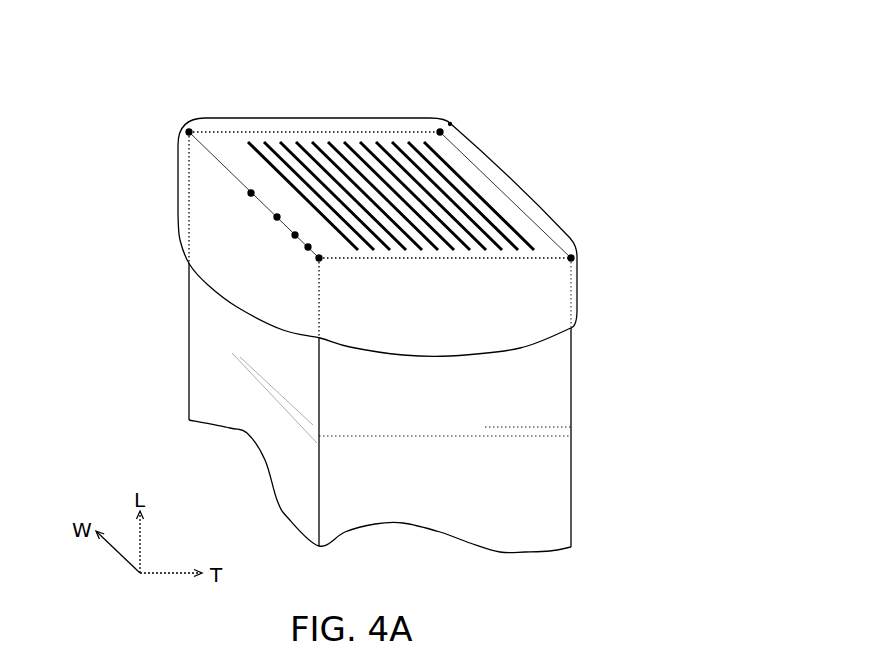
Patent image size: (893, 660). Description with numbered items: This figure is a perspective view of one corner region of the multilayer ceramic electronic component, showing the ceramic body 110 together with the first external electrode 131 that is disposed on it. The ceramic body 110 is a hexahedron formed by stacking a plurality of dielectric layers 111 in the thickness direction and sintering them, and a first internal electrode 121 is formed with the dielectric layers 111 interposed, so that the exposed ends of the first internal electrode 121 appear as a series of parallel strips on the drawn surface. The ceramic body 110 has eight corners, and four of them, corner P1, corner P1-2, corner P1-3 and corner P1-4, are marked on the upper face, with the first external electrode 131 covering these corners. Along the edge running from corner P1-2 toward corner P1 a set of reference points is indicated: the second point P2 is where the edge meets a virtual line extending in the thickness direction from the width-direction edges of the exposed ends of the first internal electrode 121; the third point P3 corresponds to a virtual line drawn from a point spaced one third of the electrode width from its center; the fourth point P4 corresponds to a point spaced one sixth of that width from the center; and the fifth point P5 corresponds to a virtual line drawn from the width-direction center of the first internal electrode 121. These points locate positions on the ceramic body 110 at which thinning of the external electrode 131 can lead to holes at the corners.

The ceramic body 110 is at (559, 392).
The dielectric layer 111 is at (341, 145).
The first internal electrode 121 is at (281, 150).
The first external electrode 131 is at (559, 290).
The corner P1 is at (309, 265).
The second point P2 is at (298, 249).
The third point P3 is at (285, 236).
The fourth point P4 is at (267, 218).
The fifth point P5 is at (243, 193).
The corner P1-2 is at (181, 124).
The corner P1-3 is at (452, 122).
The corner P1-4 is at (585, 258).